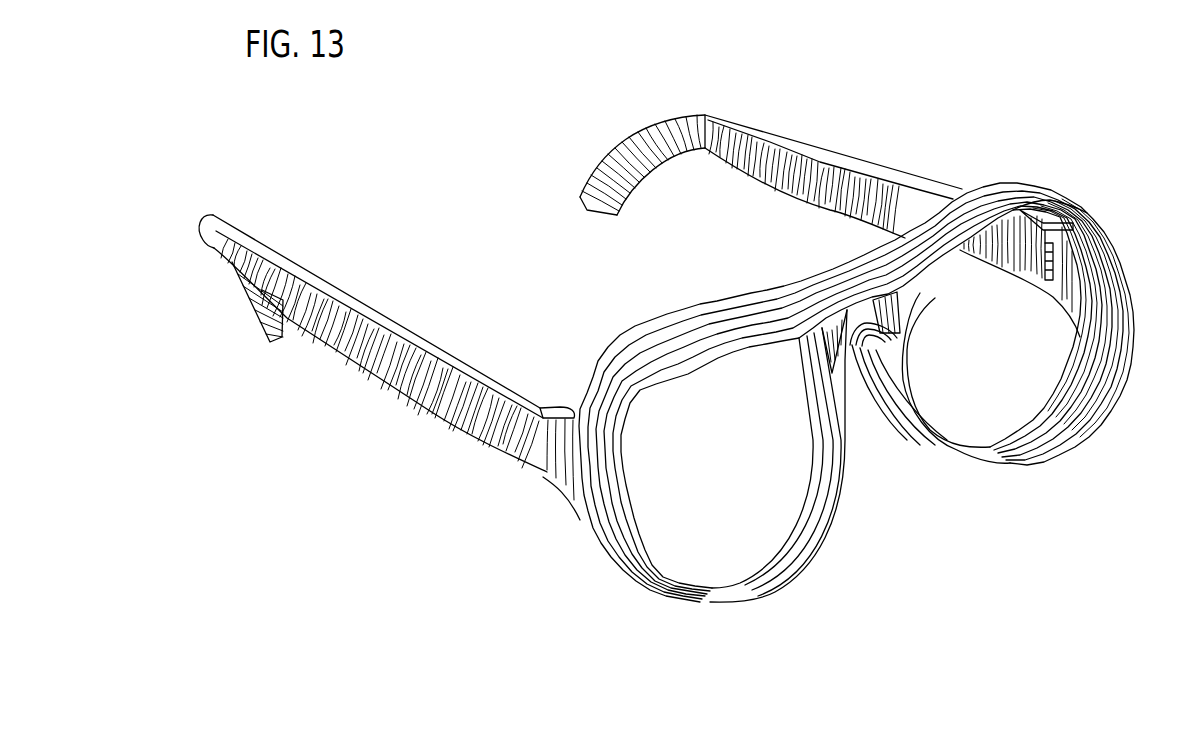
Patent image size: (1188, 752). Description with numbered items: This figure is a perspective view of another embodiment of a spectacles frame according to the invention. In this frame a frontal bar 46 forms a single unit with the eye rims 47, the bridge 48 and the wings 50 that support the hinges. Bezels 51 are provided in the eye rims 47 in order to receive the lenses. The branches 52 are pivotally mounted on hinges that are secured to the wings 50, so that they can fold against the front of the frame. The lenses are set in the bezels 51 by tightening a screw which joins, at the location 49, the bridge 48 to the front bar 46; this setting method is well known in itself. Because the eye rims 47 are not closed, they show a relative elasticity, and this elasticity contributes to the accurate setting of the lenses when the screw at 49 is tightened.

The frontal bar 46 is at (830, 283).
The eye rims 47 is at (597, 523).
The bridge 48 is at (837, 357).
The screw joint 49 is at (893, 336).
The wings 50 is at (535, 475).
The bezels 51 is at (808, 513).
The branches 52 is at (432, 401).